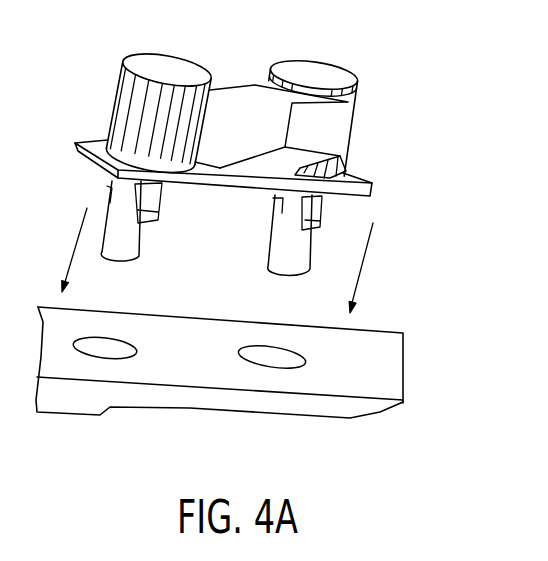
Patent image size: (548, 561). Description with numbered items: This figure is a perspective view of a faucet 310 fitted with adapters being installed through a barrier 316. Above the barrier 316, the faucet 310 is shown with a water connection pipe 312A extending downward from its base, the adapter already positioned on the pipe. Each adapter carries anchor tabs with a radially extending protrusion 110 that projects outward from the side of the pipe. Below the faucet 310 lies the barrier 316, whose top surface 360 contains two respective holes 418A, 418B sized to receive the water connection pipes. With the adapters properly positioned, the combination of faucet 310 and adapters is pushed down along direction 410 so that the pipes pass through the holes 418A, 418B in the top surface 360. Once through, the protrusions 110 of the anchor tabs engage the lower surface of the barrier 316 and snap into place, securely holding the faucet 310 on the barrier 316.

The faucet 310 is at (333, 82).
The radially extending protrusion 110 is at (321, 236).
The water connection pipe 312A is at (287, 258).
The direction 410 is at (360, 282).
The barrier 316 is at (387, 367).
The top surface 360 is at (190, 350).
The hole 418B is at (100, 348).
The hole 418A is at (273, 358).